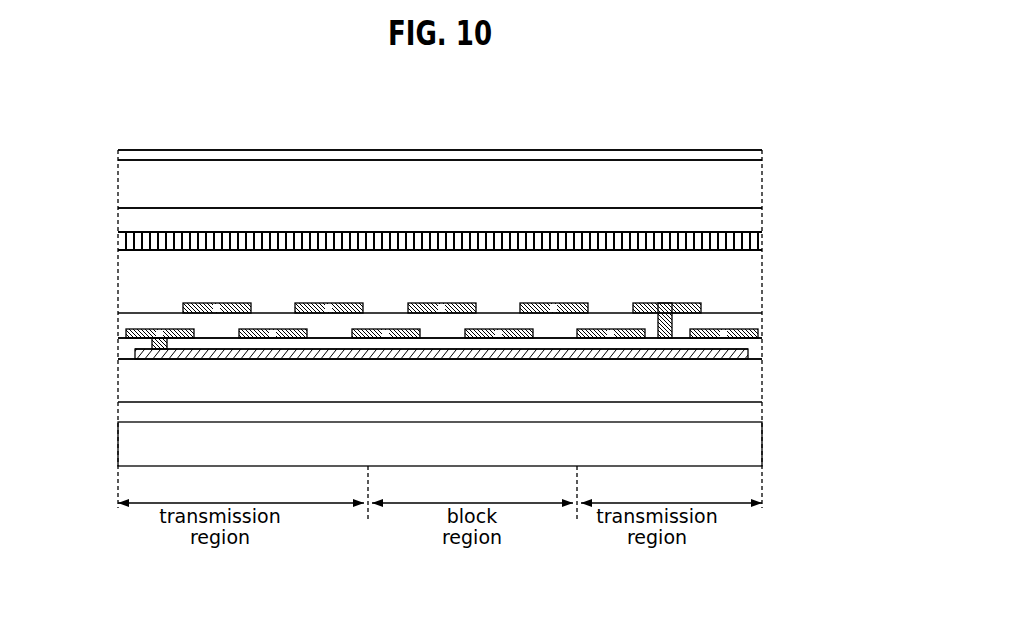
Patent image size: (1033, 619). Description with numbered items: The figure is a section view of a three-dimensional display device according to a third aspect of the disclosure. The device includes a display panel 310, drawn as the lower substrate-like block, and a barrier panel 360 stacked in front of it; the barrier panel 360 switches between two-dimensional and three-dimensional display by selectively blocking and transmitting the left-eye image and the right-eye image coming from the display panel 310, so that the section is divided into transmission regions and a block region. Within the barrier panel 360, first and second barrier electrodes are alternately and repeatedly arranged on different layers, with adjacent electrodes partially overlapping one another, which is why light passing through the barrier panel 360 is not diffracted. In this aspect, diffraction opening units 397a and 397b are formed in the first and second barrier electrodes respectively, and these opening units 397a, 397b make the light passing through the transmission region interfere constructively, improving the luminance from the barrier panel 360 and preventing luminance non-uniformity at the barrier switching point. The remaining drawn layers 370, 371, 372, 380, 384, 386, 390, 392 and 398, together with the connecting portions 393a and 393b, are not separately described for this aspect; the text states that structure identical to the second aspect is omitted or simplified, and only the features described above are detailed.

The display panel 310 is at (766, 446).
The barrier panel 360 is at (148, 185).
The lower substrate 370 is at (766, 385).
The insulating layer 371 is at (766, 350).
The insulating layer 372 is at (766, 324).
The substrate layer 380 is at (766, 190).
The layer 384 is at (766, 221).
The light blocking layer 386 is at (766, 244).
The liquid crystal layer 390 is at (766, 277).
The conductive layer 392 is at (135, 359).
The contact hole / via 393a is at (142, 344).
The contact hole / via 393b is at (684, 322).
The diffraction opening unit 397a is at (272, 348).
The diffraction opening unit 397b is at (557, 303).
The polarizer 398 is at (766, 158).